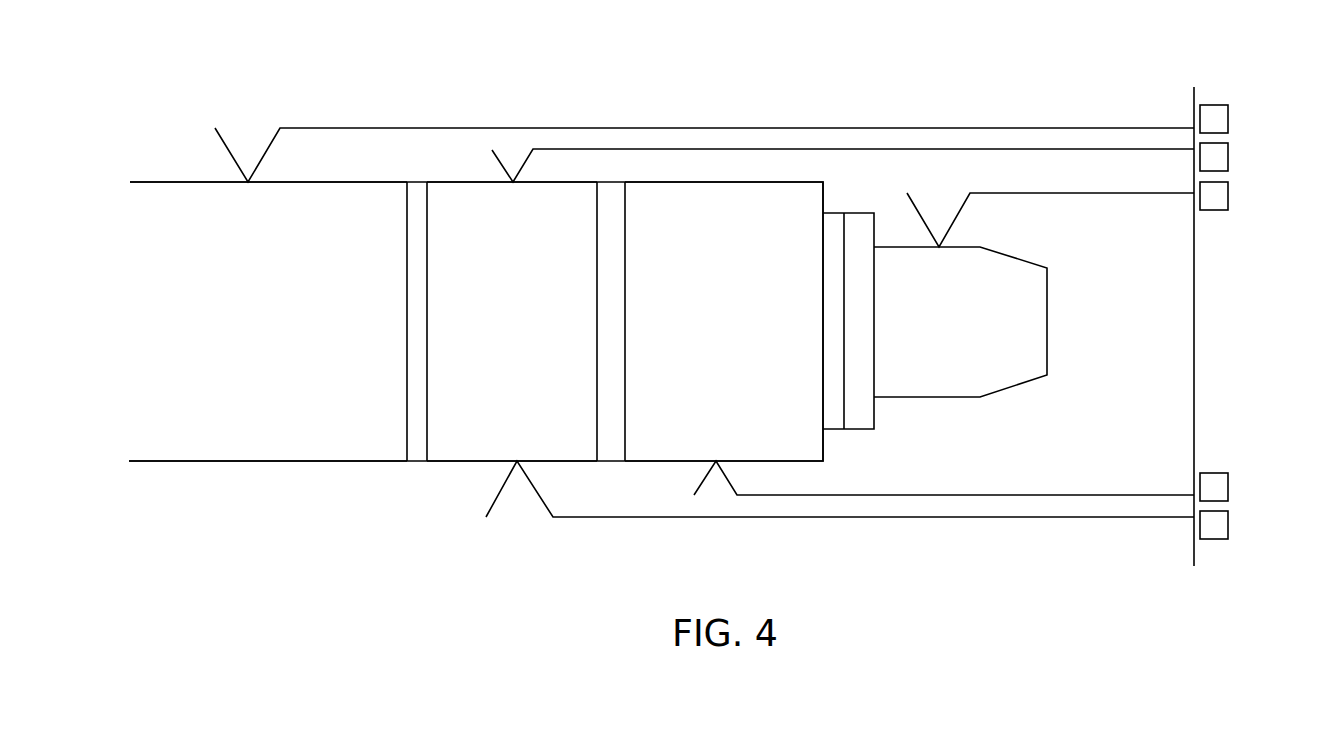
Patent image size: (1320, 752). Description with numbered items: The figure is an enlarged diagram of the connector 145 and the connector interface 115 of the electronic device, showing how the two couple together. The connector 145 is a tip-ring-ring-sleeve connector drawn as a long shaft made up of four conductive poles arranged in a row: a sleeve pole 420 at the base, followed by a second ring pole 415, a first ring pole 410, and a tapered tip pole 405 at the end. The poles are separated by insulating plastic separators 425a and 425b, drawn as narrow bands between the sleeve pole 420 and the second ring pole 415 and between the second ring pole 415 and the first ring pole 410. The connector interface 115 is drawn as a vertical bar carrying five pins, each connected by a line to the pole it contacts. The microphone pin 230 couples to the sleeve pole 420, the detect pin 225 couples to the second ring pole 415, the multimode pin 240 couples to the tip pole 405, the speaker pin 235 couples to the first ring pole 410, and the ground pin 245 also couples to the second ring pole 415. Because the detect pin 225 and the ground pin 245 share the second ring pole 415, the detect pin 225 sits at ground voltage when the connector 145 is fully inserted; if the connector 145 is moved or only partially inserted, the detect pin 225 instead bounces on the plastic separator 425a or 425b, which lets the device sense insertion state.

The connector interface 115 is at (1185, 70).
The connector 145 is at (125, 197).
The detect pin 225 is at (1228, 157).
The microphone pin 230 is at (1228, 119).
The speaker pin 235 is at (1228, 487).
The multimode pin 240 is at (1228, 196).
The ground pin 245 is at (1228, 525).
The tip pole 405 is at (973, 322).
The first ring pole 410 is at (727, 322).
The second ring pole 415 is at (512, 322).
The sleeve pole 420 is at (320, 322).
The plastic separator 425a is at (415, 353).
The plastic separator 425b is at (605, 353).